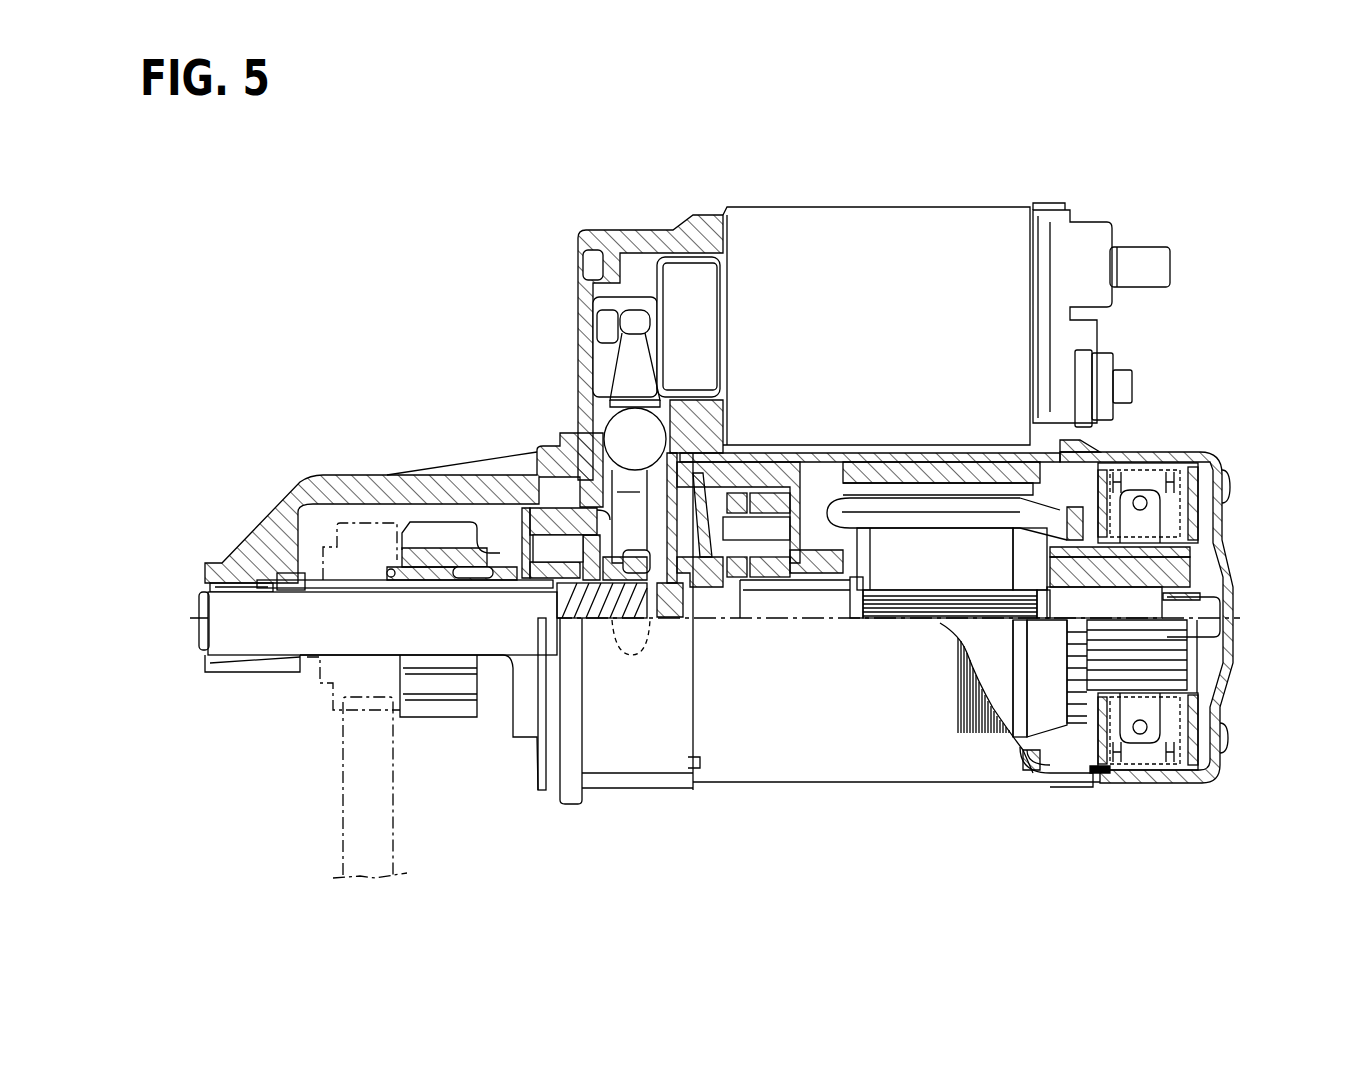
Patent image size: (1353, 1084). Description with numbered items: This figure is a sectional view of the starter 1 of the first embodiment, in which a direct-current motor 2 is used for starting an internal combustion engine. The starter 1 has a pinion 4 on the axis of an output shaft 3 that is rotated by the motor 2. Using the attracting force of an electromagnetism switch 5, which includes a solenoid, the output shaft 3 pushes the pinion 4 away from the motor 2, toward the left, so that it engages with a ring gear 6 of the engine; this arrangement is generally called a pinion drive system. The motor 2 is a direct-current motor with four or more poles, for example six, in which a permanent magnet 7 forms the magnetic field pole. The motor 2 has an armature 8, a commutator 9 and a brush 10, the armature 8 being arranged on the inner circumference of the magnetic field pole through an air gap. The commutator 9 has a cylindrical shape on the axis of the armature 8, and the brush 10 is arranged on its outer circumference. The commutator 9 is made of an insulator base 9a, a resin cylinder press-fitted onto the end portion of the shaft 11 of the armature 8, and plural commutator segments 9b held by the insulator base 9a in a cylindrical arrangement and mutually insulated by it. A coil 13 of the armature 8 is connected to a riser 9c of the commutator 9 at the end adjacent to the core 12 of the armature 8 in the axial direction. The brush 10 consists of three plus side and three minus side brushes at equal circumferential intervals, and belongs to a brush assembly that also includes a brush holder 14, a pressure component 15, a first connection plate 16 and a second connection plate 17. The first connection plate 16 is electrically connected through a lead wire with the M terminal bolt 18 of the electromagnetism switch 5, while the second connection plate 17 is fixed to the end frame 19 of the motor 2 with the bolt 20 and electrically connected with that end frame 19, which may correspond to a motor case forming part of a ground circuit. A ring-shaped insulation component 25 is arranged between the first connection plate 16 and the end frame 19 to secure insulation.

The starter 1 is at (402, 232).
The motor 2 is at (977, 796).
The output shaft 3 is at (372, 605).
The pinion 4 is at (437, 527).
The electromagnetism switch 5 is at (943, 201).
The ring gear 6 is at (347, 806).
The permanent magnet 7 is at (940, 465).
The armature 8 is at (928, 826).
The commutator 9 is at (1280, 560).
The insulator base 9a is at (1188, 592).
The commutator segments 9b is at (1182, 563).
The riser 9c is at (1072, 515).
The brush 10 is at (1140, 533).
The shaft 11 is at (957, 603).
The core 12 is at (932, 573).
The coil 13 is at (915, 520).
The brush holder 14 is at (1175, 487).
The pressure component 15 is at (1172, 476).
The first connection plate 16 is at (1105, 770).
The second connection plate 17 is at (1198, 770).
The M terminal bolt 18 is at (1122, 385).
The end frame 19 is at (1213, 553).
The bolt 20 is at (1225, 733).
The insulation component 25 is at (1097, 780).